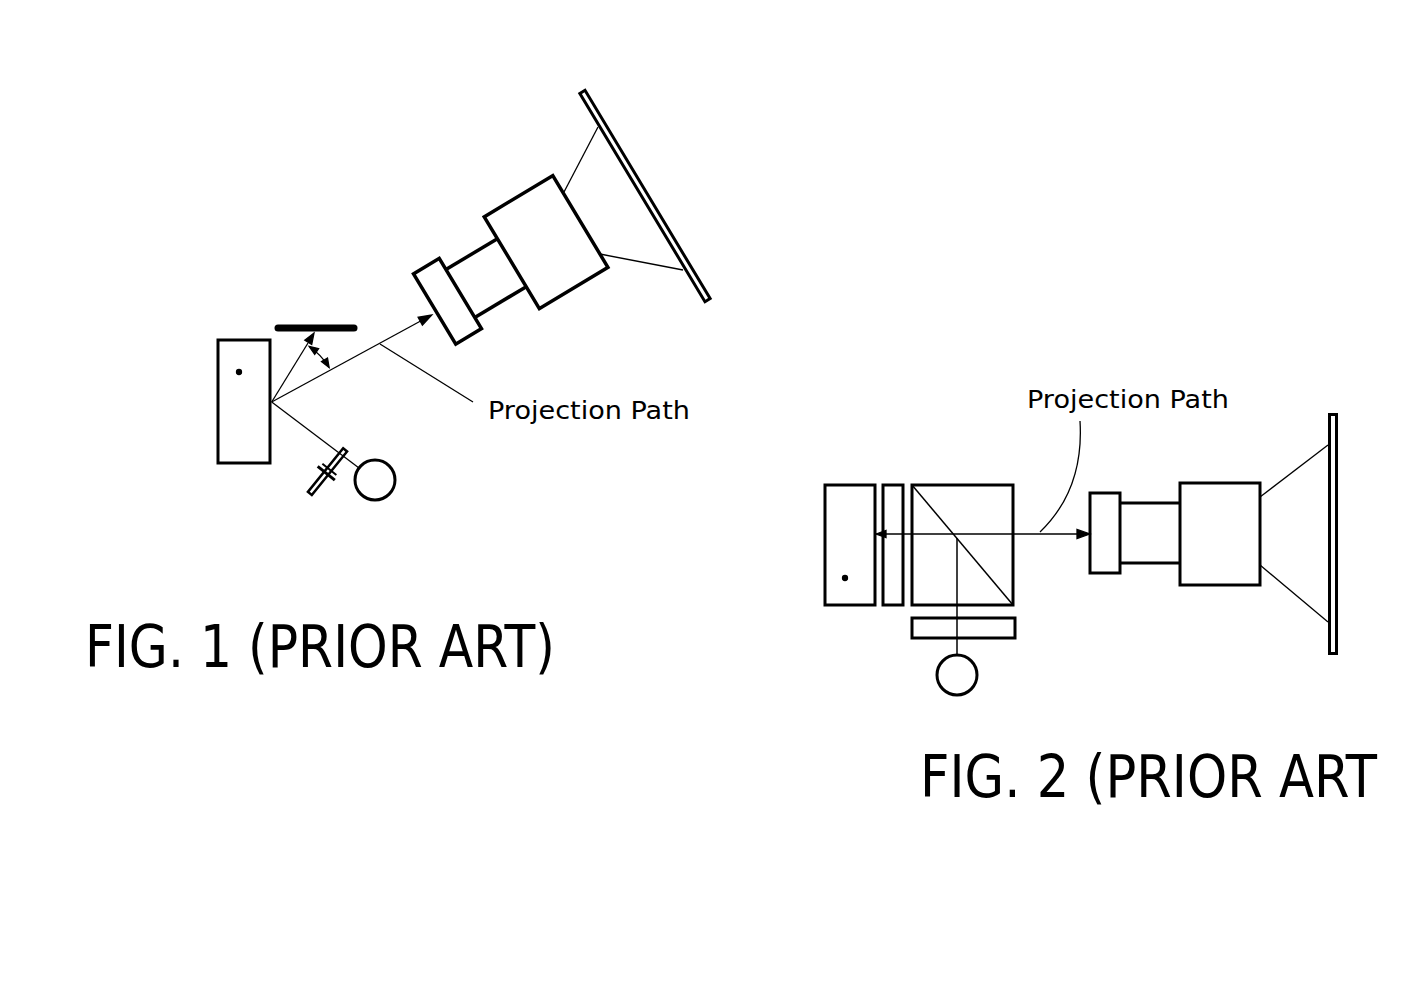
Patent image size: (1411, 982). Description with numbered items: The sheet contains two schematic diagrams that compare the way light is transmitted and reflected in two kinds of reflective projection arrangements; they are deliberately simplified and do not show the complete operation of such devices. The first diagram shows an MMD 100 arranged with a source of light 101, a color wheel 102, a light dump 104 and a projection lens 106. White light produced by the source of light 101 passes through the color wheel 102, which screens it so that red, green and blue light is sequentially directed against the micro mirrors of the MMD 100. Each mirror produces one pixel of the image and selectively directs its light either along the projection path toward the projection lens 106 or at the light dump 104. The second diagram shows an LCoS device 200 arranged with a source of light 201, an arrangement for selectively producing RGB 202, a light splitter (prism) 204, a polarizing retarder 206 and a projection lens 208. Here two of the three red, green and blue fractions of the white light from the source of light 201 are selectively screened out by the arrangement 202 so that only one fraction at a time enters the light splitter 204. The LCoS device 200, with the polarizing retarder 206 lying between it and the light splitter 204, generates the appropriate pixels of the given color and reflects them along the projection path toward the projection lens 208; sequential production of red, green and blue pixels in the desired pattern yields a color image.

In FIG. 1, the MMD 100 is at (239, 372).
In FIG. 1, the source of light 101 is at (400, 490).
In FIG. 1, the color wheel 102 is at (308, 497).
In FIG. 1, the light dump 104 is at (315, 325).
In FIG. 1, the projection lens 106 is at (570, 277).
In FIG. 2, the LCoS device 200 is at (845, 578).
In FIG. 2, the source of light 201 is at (975, 683).
In FIG. 2, the arrangement for selectively producing RGB 202 is at (1016, 627).
In FIG. 2, the light splitter (prism) 204 is at (952, 500).
In FIG. 2, the polarizing retarder 206 is at (883, 484).
In FIG. 2, the projection lens 208 is at (1217, 588).